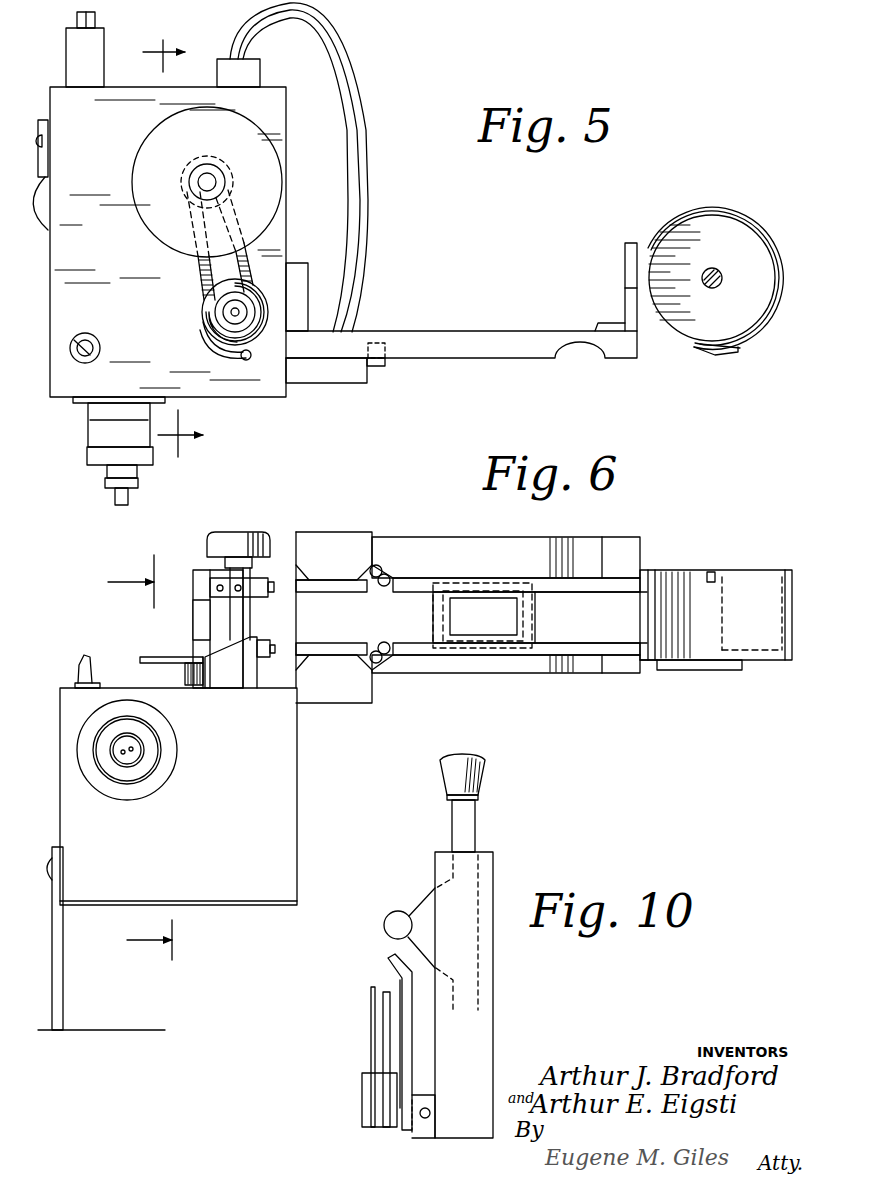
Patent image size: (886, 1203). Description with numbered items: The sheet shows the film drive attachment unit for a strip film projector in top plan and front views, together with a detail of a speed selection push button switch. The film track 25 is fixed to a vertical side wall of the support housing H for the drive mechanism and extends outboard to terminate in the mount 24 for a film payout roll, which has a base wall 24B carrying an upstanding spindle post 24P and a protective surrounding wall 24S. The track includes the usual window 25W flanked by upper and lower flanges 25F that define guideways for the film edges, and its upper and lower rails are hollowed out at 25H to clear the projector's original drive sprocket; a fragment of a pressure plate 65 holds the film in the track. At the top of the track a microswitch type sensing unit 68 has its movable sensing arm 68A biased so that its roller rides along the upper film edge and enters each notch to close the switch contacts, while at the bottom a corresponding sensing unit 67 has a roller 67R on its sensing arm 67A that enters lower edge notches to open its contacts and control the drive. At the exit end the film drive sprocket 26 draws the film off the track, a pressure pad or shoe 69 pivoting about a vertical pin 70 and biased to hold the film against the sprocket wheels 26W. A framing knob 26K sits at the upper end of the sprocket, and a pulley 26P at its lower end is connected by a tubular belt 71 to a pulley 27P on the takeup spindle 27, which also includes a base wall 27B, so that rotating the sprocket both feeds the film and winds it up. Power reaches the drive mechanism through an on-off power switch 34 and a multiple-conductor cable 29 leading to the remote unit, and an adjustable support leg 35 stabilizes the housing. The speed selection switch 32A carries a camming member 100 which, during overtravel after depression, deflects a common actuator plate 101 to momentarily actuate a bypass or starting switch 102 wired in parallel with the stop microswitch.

In FIG. 5, the support housing H is at (286, 143).
In FIG. 6, the support housing H is at (297, 795).
In FIG. 5, the mount for film payout roll 24 is at (738, 354).
In FIG. 5, the base wall 24B is at (722, 180).
In FIG. 6, the base wall 24B is at (700, 648).
In FIG. 5, the protective surrounding wall 24S is at (773, 232).
In FIG. 6, the protective surrounding wall 24S is at (748, 580).
In FIG. 5, the spindle post 24P is at (730, 255).
In FIG. 5, the film track 25 is at (487, 362).
In FIG. 6, the upper and lower flanges 25F is at (570, 587).
In FIG. 5, the hollowed-out portion of film track rails 25H is at (585, 352).
In FIG. 6, the hollowed-out portion of film track rails 25H is at (588, 546).
In FIG. 6, the window 25W is at (470, 590).
In FIG. 6, the film drive sprocket 26 is at (237, 615).
In FIG. 5, the framing knob 26K is at (235, 312).
In FIG. 6, the framing knob 26K is at (222, 530).
In FIG. 5, the pulley 26P is at (203, 314).
In FIG. 6, the sprocket wheels 26W is at (265, 578).
In FIG. 5, the spindle 27 is at (214, 175).
In FIG. 5, the base wall 27B is at (143, 198).
In FIG. 6, the base wall 27B is at (150, 658).
In FIG. 5, the pulley 27P is at (185, 168).
In FIG. 6, the pulley 27P is at (192, 688).
In FIG. 5, the multiple-conductor cable 29 is at (115, 496).
In FIG. 6, the multiple-conductor cable 29 is at (130, 756).
In FIG. 10, the speed selection switch 32A is at (487, 780).
In FIG. 5, the on-off power switch 34 is at (85, 333).
In FIG. 6, the on-off power switch 34 is at (82, 652).
In FIG. 5, the adjustable support leg 35 is at (48, 232).
In FIG. 6, the adjustable support leg 35 is at (63, 985).
In FIG. 6, the pressure plate 65 is at (443, 627).
In FIG. 5, the microswitch type sensing unit 67 is at (330, 375).
In FIG. 6, the microswitch type sensing unit 67 is at (340, 692).
In FIG. 6, the movable sensing arm 67A is at (383, 673).
In FIG. 6, the roller 67R is at (392, 578).
In FIG. 6, the microswitch type sensing unit 68 is at (348, 540).
In FIG. 6, the movable sensing arm 68A is at (380, 568).
In FIG. 5, the pressure pad or shoe 69 is at (215, 358).
In FIG. 6, the pressure pad or shoe 69 is at (235, 672).
In FIG. 5, the vertical pin 70 is at (244, 360).
In FIG. 5, the tubular belt 71 is at (195, 267).
In FIG. 6, the tubular belt 71 is at (185, 670).
In FIG. 10, the camming member 100 is at (397, 911).
In FIG. 10, the common actuator plate 101 is at (413, 1046).
In FIG. 10, the bypass or starting switch 102 is at (365, 998).